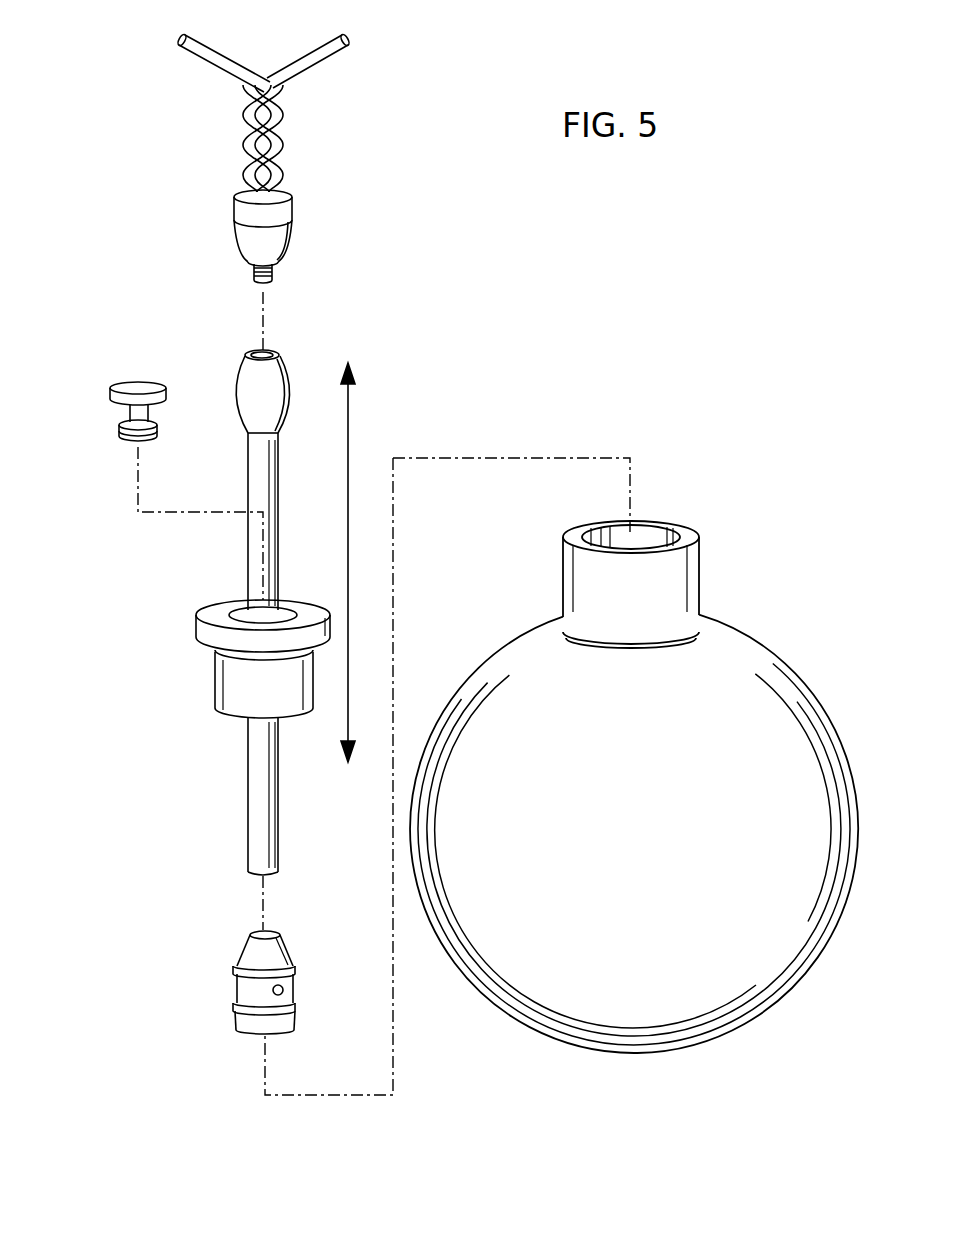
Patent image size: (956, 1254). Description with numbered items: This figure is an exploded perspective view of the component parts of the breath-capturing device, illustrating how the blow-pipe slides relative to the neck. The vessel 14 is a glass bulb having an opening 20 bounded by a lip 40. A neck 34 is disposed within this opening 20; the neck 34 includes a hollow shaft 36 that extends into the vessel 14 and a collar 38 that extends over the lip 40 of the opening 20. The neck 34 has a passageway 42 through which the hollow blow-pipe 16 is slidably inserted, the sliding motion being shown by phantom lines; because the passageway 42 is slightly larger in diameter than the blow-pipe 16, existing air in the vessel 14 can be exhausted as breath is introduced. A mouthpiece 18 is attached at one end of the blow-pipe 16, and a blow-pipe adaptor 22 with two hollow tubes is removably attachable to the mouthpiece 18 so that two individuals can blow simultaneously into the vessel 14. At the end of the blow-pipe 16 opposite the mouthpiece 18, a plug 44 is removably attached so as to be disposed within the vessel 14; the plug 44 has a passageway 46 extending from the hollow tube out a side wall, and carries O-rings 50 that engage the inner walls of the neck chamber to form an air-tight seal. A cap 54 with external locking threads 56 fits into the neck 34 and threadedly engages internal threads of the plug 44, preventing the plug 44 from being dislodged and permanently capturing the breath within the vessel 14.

The vessel 14 is at (636, 766).
The hollow blow-pipe 16 is at (225, 563).
The mouthpiece 18 is at (243, 358).
The opening 20 is at (648, 530).
The blow-pipe adaptor 22 is at (342, 145).
The neck 34 is at (231, 652).
The hollow shaft 36 is at (230, 705).
The collar 38 is at (207, 633).
The lip 40 is at (695, 537).
The passageway 42 is at (286, 603).
The plug 44 is at (255, 984).
The passageway 46 is at (283, 988).
The O-rings 50 is at (290, 968).
The cap 54 is at (112, 395).
The external locking threads 56 is at (122, 432).